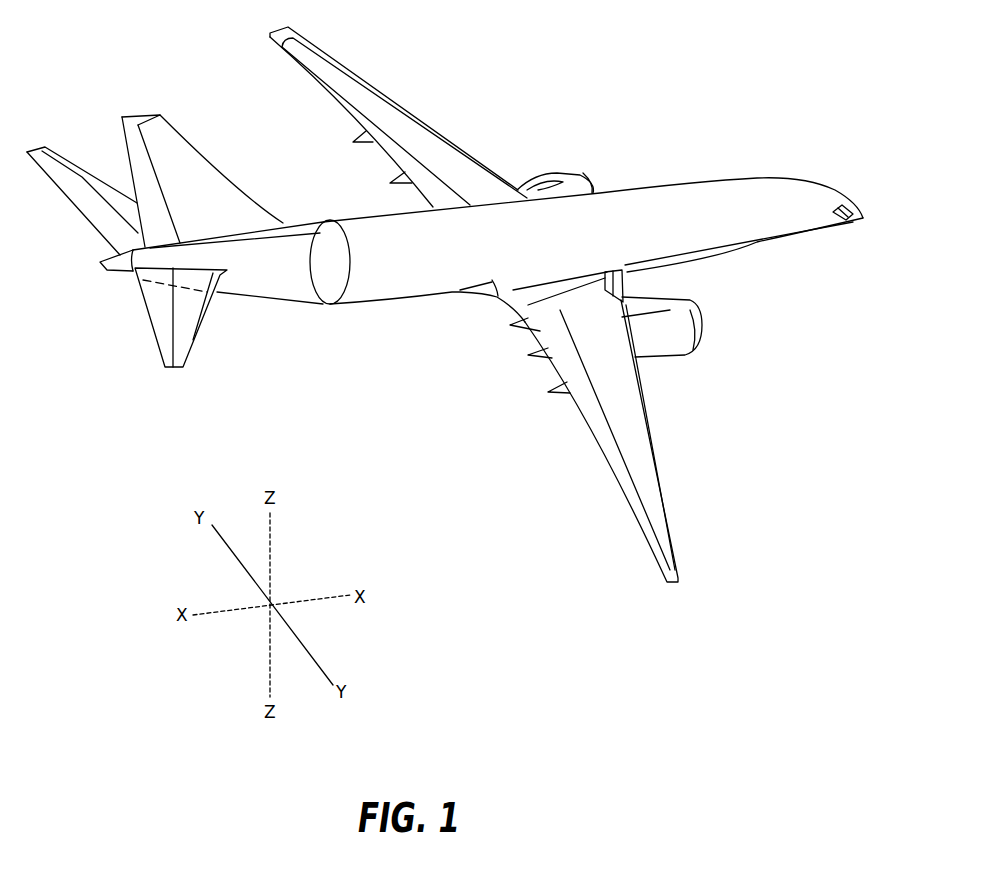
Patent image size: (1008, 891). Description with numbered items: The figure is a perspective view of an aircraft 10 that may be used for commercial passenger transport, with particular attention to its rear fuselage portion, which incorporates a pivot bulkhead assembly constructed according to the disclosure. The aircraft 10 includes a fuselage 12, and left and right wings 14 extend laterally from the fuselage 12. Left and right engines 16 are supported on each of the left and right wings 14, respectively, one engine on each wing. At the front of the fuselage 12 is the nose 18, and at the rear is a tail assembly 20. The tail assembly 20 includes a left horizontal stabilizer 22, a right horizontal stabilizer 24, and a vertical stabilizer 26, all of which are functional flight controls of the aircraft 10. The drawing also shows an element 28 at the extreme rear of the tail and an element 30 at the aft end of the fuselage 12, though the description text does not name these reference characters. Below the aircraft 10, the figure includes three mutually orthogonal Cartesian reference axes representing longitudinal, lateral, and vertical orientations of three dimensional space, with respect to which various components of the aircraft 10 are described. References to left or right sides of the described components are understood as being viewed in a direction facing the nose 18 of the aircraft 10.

The aircraft 10 is at (547, 84).
The fuselage 12 is at (455, 262).
The wings 14 is at (440, 152).
The engines 16 is at (571, 175).
The nose 18 is at (858, 216).
The tail assembly 20 is at (272, 330).
The left horizontal stabilizer 22 is at (82, 177).
The right horizontal stabilizer 24 is at (185, 340).
The vertical stabilizer 26 is at (203, 178).
The tail cone 28 is at (99, 268).
The aft engine nacelle 30 is at (360, 217).